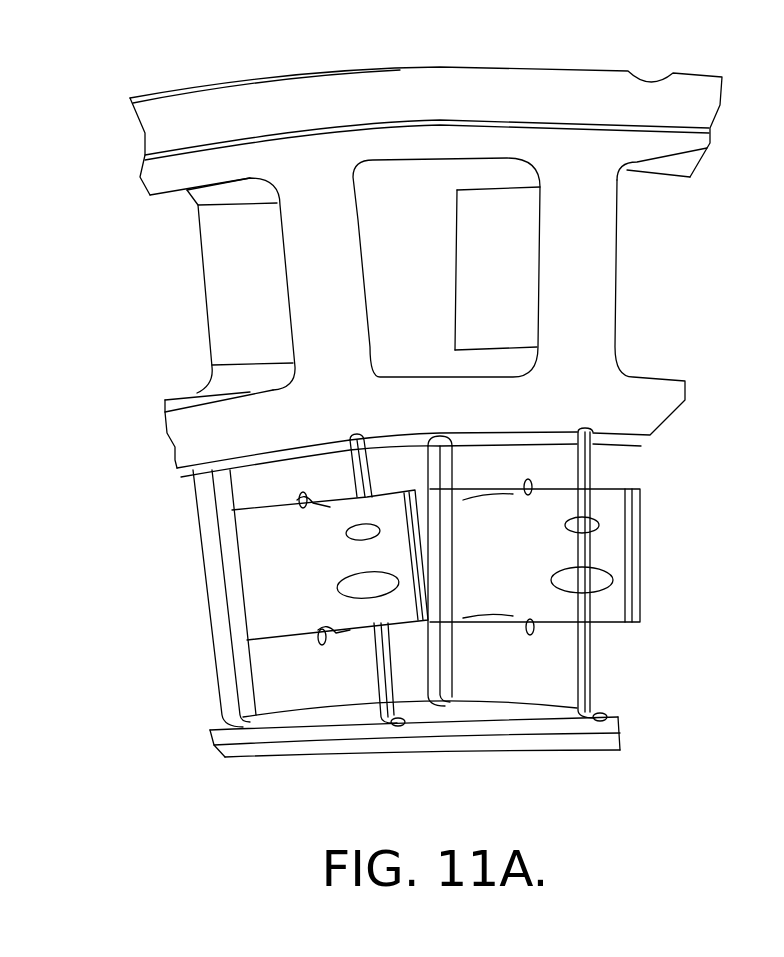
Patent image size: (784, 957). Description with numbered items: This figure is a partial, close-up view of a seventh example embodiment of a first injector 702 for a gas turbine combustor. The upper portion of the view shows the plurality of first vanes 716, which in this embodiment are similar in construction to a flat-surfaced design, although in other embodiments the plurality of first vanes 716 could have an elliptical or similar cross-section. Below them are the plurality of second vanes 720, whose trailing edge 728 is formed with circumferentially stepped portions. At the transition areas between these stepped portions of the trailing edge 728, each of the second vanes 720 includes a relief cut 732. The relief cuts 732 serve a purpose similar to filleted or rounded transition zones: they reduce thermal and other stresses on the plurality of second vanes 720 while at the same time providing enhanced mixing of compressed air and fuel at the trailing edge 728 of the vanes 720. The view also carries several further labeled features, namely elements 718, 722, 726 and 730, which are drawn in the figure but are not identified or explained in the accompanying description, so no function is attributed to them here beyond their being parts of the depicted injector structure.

The first injector 702 is at (230, 90).
The plurality of first vanes 716 is at (297, 233).
The second opening 718 is at (407, 270).
The plurality of second vanes 720 is at (220, 488).
The second post 722 is at (400, 657).
The apertures 726 is at (588, 528).
The trailing edge 728 is at (583, 673).
The fourth post 730 is at (428, 665).
The relief cut 732 is at (305, 500).